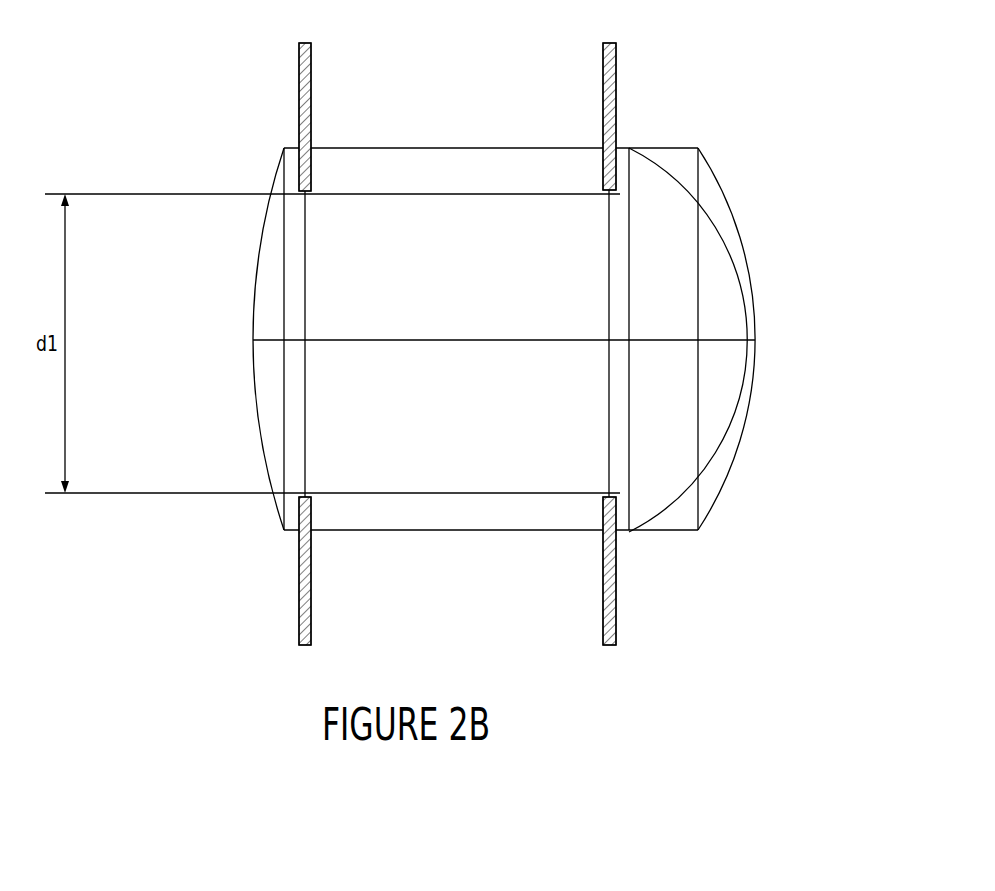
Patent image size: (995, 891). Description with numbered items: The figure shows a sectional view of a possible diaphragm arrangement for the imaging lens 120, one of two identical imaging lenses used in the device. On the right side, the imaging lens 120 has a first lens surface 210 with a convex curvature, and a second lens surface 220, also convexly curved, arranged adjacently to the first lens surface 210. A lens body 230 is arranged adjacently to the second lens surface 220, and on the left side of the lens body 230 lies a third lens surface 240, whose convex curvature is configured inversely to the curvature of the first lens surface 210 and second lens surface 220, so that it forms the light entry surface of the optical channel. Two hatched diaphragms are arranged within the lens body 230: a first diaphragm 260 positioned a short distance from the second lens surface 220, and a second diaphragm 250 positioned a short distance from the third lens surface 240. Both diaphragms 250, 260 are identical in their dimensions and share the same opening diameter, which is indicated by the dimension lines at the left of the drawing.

The imaging lens 120 is at (731, 131).
The first lens surface 210 is at (743, 290).
The second lens surface 220 is at (699, 244).
The lens body 230 is at (490, 519).
The third lens surface 240 is at (278, 456).
The second diaphragm 250 is at (312, 73).
The first diaphragm 260 is at (617, 73).